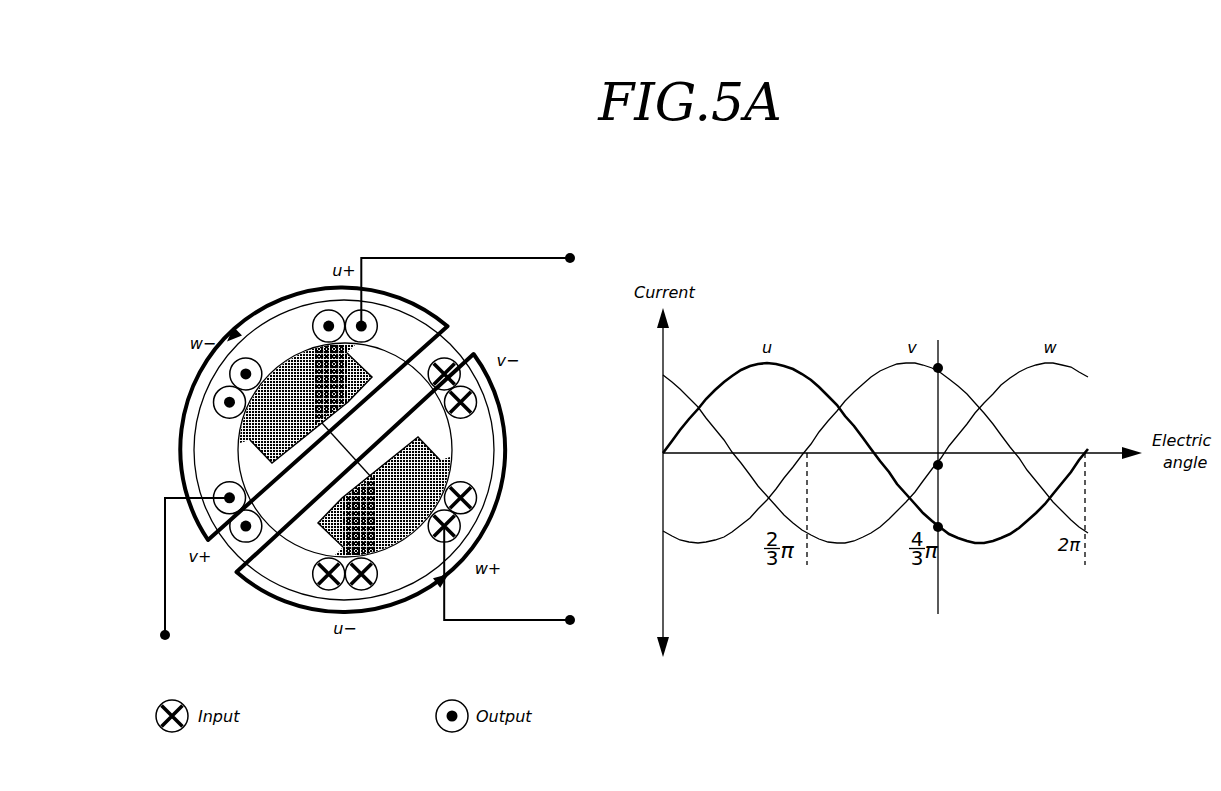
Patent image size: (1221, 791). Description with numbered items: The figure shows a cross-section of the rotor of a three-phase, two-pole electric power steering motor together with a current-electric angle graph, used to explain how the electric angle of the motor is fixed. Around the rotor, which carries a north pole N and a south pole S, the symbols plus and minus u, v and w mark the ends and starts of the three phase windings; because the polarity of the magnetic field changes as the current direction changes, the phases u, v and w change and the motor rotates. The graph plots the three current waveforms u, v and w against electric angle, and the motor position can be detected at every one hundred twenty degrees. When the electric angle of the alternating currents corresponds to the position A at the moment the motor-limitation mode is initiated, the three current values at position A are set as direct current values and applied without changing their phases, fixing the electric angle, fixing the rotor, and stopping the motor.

The u-phase winding u is at (468, 289).
The v-phase winding v is at (195, 575).
The w-phase winding w is at (519, 579).
The north pole N is at (282, 360).
The south pole S is at (412, 540).
The position A is at (936, 489).